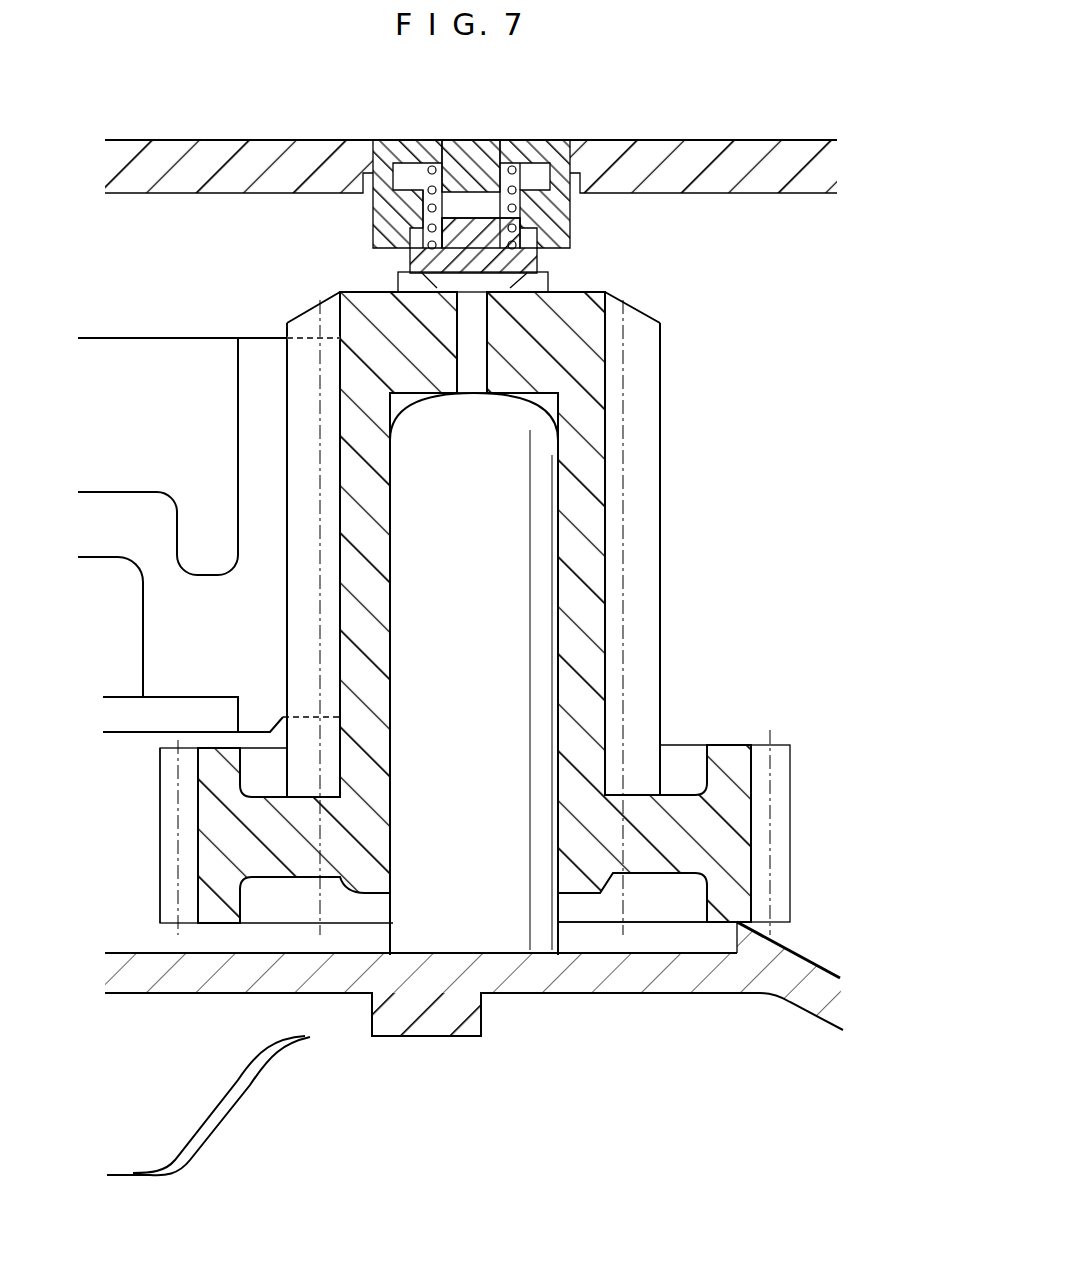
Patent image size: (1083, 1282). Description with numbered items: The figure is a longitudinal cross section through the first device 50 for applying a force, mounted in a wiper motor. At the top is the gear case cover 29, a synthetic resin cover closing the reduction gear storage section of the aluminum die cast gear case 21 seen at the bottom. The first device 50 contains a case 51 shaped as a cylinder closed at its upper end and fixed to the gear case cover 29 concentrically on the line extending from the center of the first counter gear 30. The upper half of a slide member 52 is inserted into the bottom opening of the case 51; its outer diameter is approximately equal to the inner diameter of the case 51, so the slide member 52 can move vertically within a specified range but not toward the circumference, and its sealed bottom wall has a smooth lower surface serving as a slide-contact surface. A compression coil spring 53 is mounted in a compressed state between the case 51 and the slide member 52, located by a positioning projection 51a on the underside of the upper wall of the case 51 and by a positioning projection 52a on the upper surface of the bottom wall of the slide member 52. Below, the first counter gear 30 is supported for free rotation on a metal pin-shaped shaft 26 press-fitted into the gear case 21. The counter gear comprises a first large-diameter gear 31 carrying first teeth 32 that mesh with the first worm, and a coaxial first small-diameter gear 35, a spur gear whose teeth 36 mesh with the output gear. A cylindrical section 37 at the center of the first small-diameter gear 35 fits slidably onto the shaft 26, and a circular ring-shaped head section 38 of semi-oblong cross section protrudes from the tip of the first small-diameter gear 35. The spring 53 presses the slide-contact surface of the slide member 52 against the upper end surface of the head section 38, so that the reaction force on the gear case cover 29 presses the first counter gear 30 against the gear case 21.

The gear case 21 is at (694, 978).
The shaft 26 is at (542, 682).
The gear case cover 29 is at (651, 137).
The first counter gear 30 is at (474, 588).
The first large-diameter gear 31 is at (158, 820).
The first teeth 32 is at (172, 890).
The first small-diameter gear 35 is at (318, 540).
The teeth 36 is at (287, 658).
The cylindrical section 37 is at (593, 470).
The head section 38 is at (550, 275).
The first device 50 is at (475, 175).
The case 51 is at (447, 167).
The positioning projection 51a is at (468, 182).
The slide member 52 is at (475, 248).
The positioning projection 52a is at (490, 233).
The compression coil spring 53 is at (432, 166).